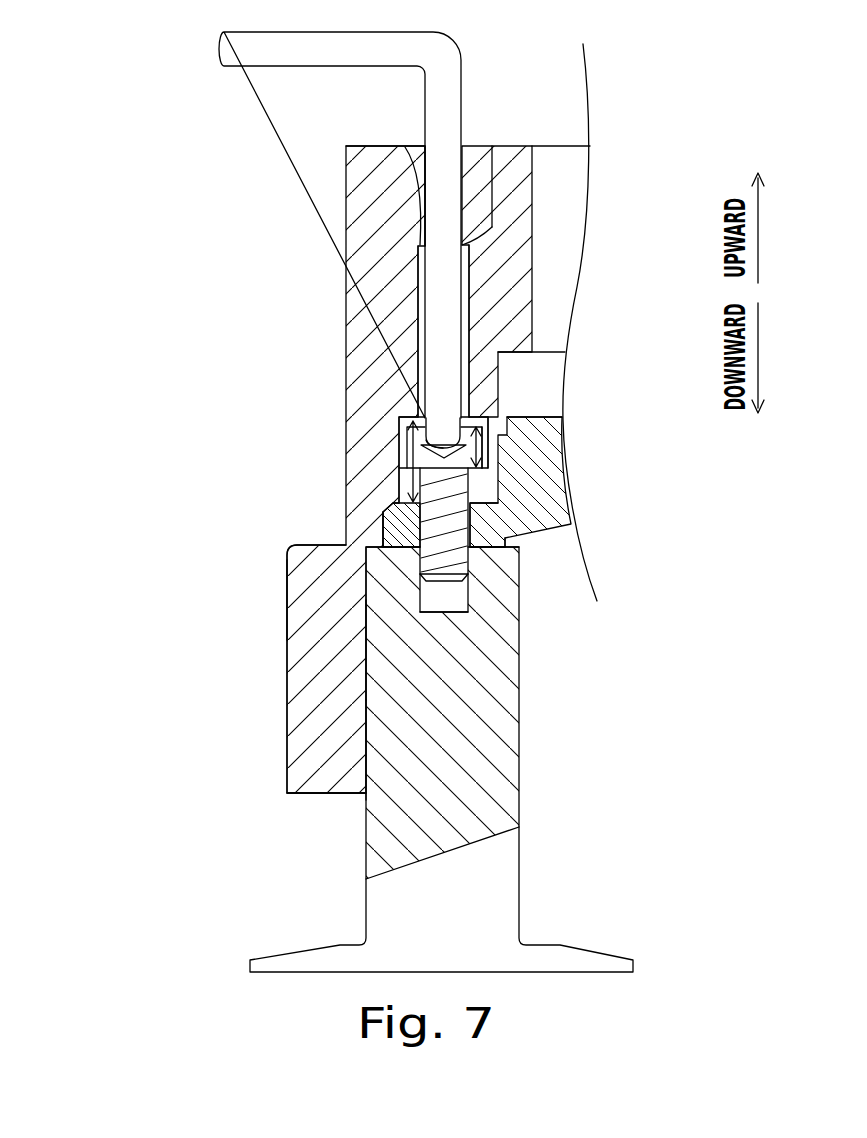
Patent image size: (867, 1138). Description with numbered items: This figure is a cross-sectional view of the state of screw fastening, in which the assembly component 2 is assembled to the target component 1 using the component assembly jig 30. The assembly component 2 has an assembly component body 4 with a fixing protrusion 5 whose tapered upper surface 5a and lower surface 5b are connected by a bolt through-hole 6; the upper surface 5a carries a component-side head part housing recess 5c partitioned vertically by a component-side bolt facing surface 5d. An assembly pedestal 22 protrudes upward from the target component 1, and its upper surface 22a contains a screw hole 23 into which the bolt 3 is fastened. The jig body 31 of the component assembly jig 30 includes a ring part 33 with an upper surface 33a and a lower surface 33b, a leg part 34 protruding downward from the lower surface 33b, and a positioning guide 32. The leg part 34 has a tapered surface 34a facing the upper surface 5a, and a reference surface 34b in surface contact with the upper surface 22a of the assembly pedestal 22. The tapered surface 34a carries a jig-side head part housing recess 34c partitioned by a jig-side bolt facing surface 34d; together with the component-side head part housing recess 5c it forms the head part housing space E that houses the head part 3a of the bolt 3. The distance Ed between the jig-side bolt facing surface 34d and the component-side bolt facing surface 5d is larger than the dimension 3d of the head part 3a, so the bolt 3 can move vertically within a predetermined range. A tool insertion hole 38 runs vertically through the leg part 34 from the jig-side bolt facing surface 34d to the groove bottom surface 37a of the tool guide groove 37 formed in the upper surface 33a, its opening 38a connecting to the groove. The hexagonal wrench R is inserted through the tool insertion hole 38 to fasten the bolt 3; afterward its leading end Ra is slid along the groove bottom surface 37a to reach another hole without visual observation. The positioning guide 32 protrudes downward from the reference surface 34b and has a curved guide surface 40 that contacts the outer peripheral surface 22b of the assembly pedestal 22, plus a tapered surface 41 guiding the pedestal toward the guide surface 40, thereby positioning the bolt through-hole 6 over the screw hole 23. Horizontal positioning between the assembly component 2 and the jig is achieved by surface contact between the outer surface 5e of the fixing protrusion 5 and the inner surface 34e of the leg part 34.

The jig body 31 is at (343, 192).
The component assembly jig 30 is at (310, 469).
The positioning guide 32 is at (330, 672).
The ring part 33 is at (385, 245).
The upper surface 33a is at (517, 145).
The lower surface 33b is at (527, 352).
The leg part 34 is at (387, 408).
The tapered surface 34a is at (381, 534).
The reference surface 34b is at (288, 588).
The jig-side head part housing recess 34c is at (398, 428).
The jig-side bolt facing surface 34d is at (443, 442).
The inner surface 34e is at (398, 551).
The tool guide groove 37 is at (491, 190).
The groove bottom surface 37a is at (474, 238).
The tool insertion hole 38 is at (470, 313).
The opening 38a is at (418, 243).
The hexagonal wrench R is at (458, 82).
The leading end Ra is at (450, 430).
The distance Ed is at (445, 430).
The head part housing space E is at (208, 442).
The assembly component 2 is at (575, 470).
The bolt 3 is at (520, 482).
The head part 3a is at (487, 452).
The dimension 3d is at (483, 436).
The assembly component body 4 is at (530, 470).
The fixing protrusion 5 is at (480, 523).
The upper surface 5a is at (486, 450).
The lower surface 5b is at (500, 552).
The component-side head part housing recess 5c is at (392, 503).
The component-side bolt facing surface 5d is at (401, 525).
The outer surface 5e is at (382, 545).
The bolt through-hole 6 is at (465, 506).
The assembly pedestal 22 is at (446, 743).
The target component 1 is at (441, 759).
The upper surface 22a is at (522, 543).
The outer peripheral surface 22b is at (360, 722).
The screw hole 23 is at (469, 606).
The guide surface 40 is at (366, 679).
The tapered surface 41 is at (323, 786).